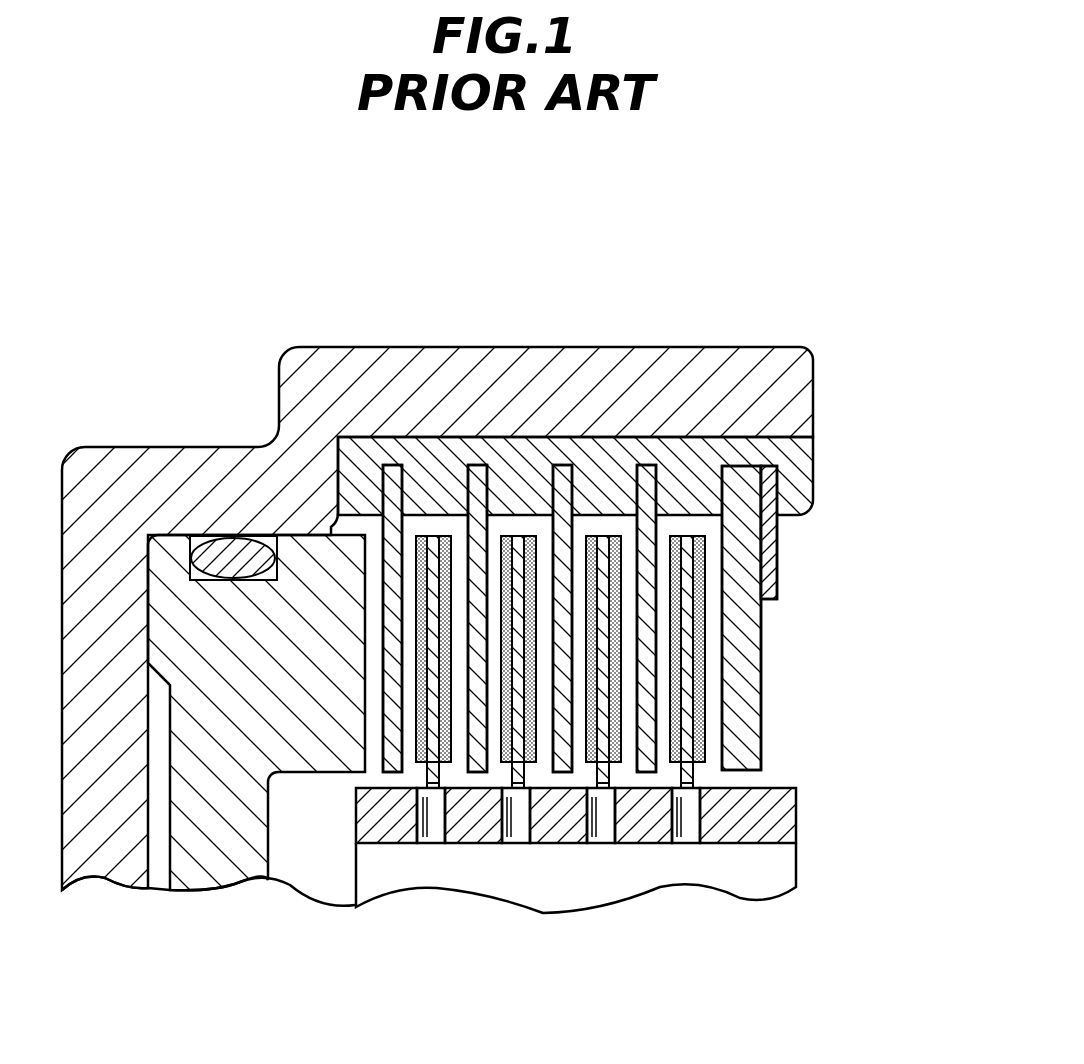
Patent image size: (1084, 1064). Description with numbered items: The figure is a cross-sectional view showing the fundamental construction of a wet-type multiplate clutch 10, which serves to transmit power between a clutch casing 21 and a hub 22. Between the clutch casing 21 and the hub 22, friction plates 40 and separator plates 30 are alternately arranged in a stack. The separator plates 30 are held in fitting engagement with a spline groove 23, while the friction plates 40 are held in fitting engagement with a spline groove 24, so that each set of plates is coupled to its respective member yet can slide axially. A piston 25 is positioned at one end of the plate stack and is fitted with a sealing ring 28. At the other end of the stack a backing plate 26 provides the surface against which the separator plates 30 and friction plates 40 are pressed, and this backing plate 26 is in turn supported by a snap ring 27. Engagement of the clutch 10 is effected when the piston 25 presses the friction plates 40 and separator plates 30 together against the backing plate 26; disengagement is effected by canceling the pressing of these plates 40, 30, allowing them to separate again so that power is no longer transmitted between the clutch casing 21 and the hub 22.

The wet-type multiplate clutch 10 is at (832, 266).
The clutch casing 21 is at (313, 382).
The hub 22 is at (748, 870).
The spline groove 23 is at (797, 460).
The spline groove 24 is at (768, 818).
The piston 25 is at (168, 563).
The backing plate 26 is at (742, 716).
The snap ring 27 is at (768, 578).
The sealing ring 28 is at (237, 562).
The separator plates 30 is at (392, 472).
The friction plates 40 is at (430, 550).